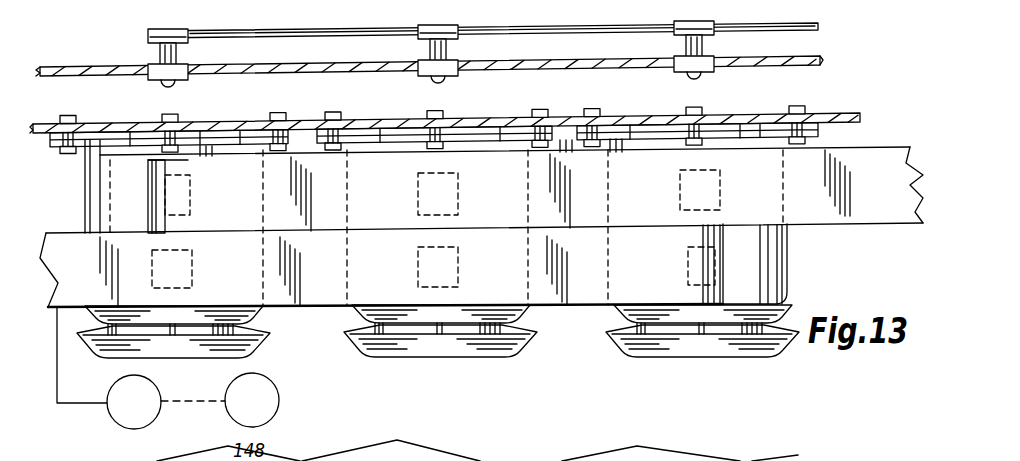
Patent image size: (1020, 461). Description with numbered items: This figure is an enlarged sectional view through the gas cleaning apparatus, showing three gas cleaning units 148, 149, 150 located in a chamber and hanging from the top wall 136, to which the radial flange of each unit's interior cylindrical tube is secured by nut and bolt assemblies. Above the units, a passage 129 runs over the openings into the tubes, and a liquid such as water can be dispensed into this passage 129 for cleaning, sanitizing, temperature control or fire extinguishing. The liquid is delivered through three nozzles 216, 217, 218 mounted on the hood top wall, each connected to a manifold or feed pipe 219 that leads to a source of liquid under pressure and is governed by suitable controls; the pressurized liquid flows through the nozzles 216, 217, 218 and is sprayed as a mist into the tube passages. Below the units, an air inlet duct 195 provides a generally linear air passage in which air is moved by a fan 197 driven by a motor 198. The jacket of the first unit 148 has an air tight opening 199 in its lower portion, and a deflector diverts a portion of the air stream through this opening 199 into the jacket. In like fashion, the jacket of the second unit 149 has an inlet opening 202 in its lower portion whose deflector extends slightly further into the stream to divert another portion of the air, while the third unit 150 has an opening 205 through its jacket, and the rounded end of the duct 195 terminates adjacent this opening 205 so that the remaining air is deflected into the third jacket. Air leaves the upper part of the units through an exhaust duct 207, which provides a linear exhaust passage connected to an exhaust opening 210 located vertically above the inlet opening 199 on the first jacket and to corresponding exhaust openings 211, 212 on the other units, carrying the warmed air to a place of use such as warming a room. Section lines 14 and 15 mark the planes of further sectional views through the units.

The passage 129 is at (93, 78).
The manifold or feed pipe 219 is at (633, 27).
The nozzle 216 is at (190, 76).
The nozzle 217 is at (458, 74).
The nozzle 218 is at (712, 70).
The top wall 136 is at (852, 113).
The section line 15- 15 is at (36, 116).
The section line 14- 14 is at (92, 271).
The exhaust duct 207 is at (150, 178).
The exhaust opening 210 is at (190, 190).
The switch 211 is at (458, 191).
The switch 212 is at (700, 170).
The air tight opening 199 is at (192, 273).
The inlet opening 202 is at (458, 268).
The opening 205 is at (690, 264).
The air inlet duct 195 is at (320, 303).
The gas cleaning unit 148 is at (258, 313).
The gas cleaning unit 149 is at (530, 310).
The gas cleaning unit 150 is at (778, 294).
The fan 197 is at (158, 385).
The motor 198 is at (280, 394).